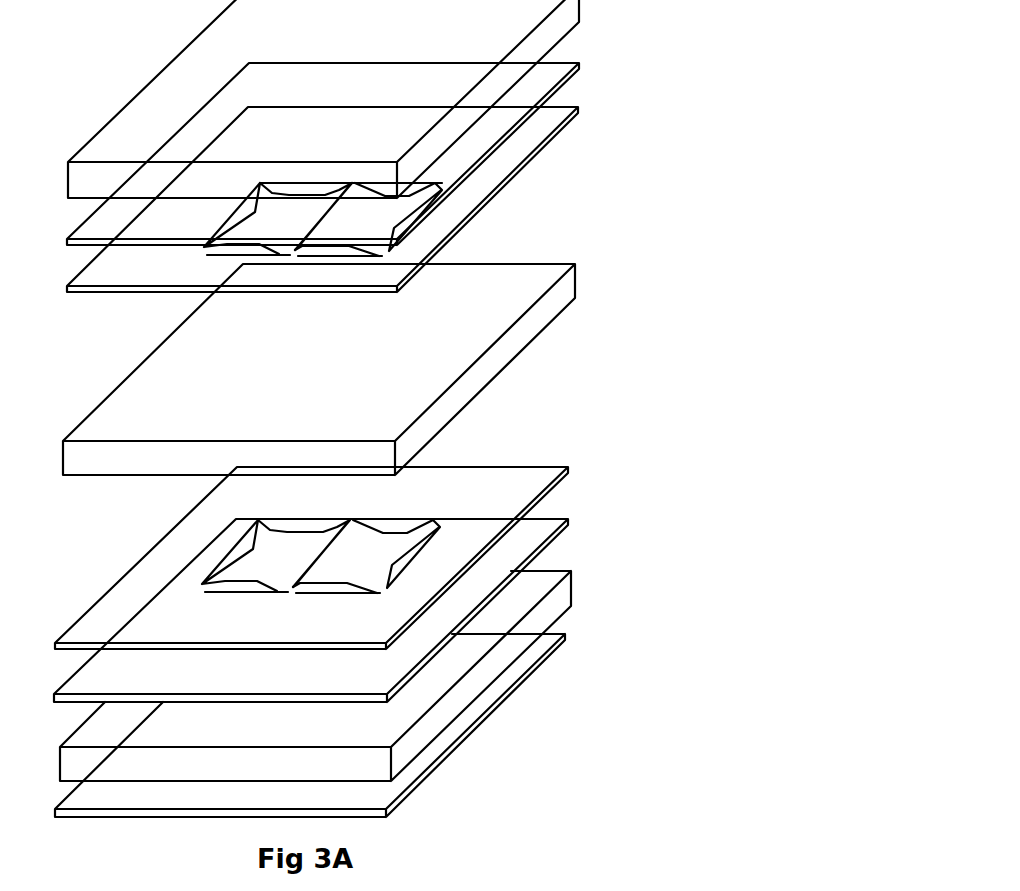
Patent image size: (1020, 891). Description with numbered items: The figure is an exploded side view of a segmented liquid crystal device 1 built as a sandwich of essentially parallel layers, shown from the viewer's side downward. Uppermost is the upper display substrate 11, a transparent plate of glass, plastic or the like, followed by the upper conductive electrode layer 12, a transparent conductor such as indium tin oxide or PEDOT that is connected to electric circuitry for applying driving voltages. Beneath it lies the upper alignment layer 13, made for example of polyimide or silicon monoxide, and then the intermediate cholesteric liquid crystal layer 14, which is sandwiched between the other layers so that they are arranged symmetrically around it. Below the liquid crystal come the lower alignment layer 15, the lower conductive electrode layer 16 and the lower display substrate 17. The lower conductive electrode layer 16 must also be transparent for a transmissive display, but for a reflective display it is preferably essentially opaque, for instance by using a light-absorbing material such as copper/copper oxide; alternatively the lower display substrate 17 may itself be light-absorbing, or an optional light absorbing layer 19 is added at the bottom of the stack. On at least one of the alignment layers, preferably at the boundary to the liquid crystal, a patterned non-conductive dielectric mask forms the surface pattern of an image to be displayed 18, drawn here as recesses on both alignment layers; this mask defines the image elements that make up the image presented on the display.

The liquid crystal device 1 is at (803, 116).
The upper display substrate 11 is at (580, 8).
The upper conductive electrode layer 12 is at (579, 64).
The upper alignment layer 13 is at (579, 109).
The intermediate cholesteric liquid crystal layer 14 is at (576, 270).
The lower alignment layer 15 is at (569, 469).
The lower conductive electrode layer 16 is at (569, 522).
The lower display substrate 17 is at (572, 590).
The surface pattern of an image to be displayed 18 is at (430, 197).
The light absorbing layer 19 is at (566, 641).